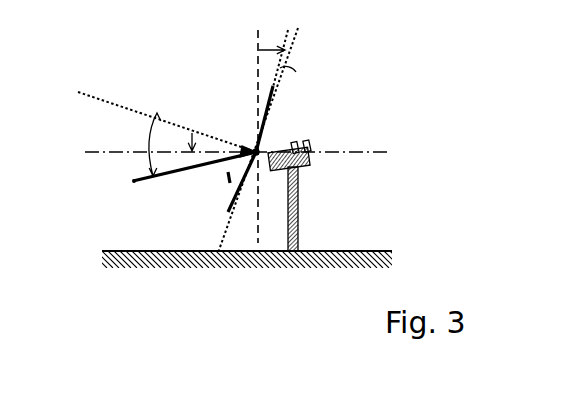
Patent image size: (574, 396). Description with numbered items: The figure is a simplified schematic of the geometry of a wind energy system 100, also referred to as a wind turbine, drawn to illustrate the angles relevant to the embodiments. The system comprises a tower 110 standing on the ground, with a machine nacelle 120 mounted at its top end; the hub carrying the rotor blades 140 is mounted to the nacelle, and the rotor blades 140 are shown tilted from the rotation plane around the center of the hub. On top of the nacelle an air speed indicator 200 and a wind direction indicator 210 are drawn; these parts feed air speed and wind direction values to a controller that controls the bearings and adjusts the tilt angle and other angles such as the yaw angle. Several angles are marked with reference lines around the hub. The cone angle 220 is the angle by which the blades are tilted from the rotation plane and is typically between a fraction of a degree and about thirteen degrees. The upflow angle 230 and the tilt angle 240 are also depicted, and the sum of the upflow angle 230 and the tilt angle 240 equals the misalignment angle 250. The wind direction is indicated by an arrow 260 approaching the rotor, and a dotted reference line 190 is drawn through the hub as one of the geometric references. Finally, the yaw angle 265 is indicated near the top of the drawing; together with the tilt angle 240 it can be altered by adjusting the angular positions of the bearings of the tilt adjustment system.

The wind energy system 100 is at (279, 161).
The tower 110 is at (299, 205).
The machine nacelle 120 is at (312, 168).
The rotor blades 140 is at (263, 92).
The blade reference line 190 is at (84, 89).
The air speed indicator 200 is at (318, 150).
The wind direction indicator 210 is at (300, 142).
The cone angle 220 is at (307, 56).
The upflow angle 230 is at (197, 176).
The tilt angle 240 is at (280, 222).
The misalignment angle 250 is at (160, 108).
The arrow 260 is at (133, 182).
The yaw angle 265 is at (292, 76).